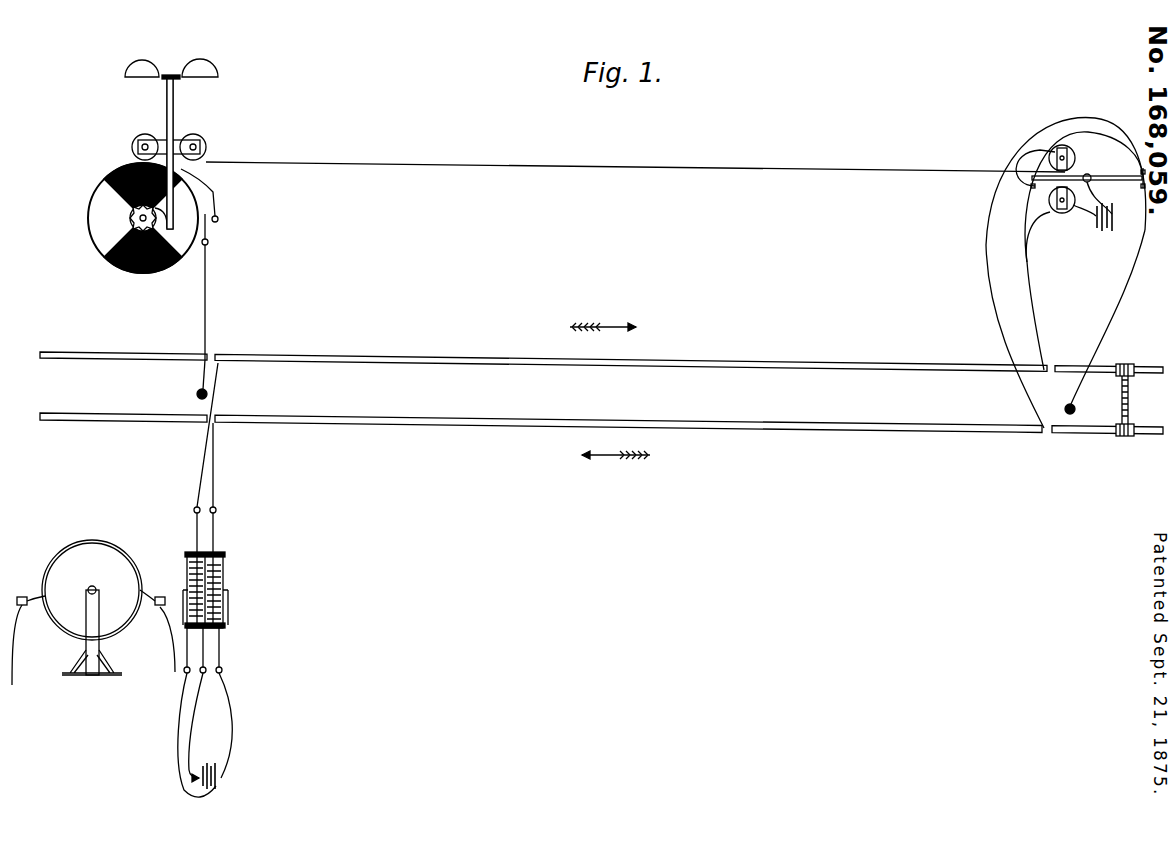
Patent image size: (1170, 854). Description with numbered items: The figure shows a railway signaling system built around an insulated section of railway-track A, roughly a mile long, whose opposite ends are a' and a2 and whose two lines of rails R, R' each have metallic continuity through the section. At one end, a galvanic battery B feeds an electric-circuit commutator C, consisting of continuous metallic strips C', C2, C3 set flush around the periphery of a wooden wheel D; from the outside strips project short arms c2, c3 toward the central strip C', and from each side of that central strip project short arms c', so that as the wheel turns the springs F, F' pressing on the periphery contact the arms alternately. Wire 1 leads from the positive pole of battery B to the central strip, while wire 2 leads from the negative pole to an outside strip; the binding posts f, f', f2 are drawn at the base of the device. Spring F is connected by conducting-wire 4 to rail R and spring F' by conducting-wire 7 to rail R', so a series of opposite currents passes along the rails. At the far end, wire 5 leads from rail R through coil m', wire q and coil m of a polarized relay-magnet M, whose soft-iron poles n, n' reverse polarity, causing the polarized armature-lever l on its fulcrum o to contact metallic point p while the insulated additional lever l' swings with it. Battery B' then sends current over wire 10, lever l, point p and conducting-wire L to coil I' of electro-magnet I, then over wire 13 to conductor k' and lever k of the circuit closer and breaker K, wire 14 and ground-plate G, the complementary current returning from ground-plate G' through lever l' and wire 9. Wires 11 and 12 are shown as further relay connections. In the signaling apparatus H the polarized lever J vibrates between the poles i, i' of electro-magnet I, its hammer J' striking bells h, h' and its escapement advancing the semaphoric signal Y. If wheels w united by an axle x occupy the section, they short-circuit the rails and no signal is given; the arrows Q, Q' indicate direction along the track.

The bell h is at (142, 69).
The bell h' is at (200, 68).
The hammer J' is at (171, 68).
The polarized lever J is at (173, 154).
The electro-magnet I is at (157, 137).
The coil of electro-magnet I' is at (214, 150).
The signaling apparatus H is at (98, 125).
The pole of electro-magnet i is at (153, 148).
The pole of electro-magnet i' is at (185, 148).
The semaphoric signal Y is at (126, 176).
The circuit closer and breaker K is at (230, 218).
The metallic lever k is at (208, 230).
The metallic conductor k' is at (218, 208).
The wire 13 is at (198, 192).
The wire 14 is at (211, 317).
The conducting-wire L is at (635, 157).
The line of rails R is at (601, 359).
The line of rails R' is at (601, 432).
The insulated section of railway-track A is at (692, 391).
The direction arrow Q is at (603, 319).
The direction arrow Q' is at (616, 463).
The ground-plate G is at (195, 394).
The end of section a' is at (215, 435).
The conducting-wire 4 is at (199, 445).
The conducting-wire 7 is at (218, 465).
The metallic spring F is at (189, 527).
The metallic spring F' is at (220, 528).
The electric-circuit commutator C is at (197, 588).
The continuous metallic strip C' is at (205, 540).
The continuous metallic strip C2 is at (190, 552).
The continuous metallic strip C3 is at (222, 552).
The short strip or arm c' is at (236, 571).
The short strip or arm c2 is at (186, 590).
The short strip or arm c3 is at (223, 560).
The binding post f is at (204, 650).
The binding post f' is at (189, 650).
The binding post f2 is at (222, 650).
The wire 1 is at (195, 727).
The wire 2 is at (193, 735).
The galvanic battery B is at (213, 768).
The polarized relay-magnet M is at (1068, 179).
The coil m is at (1060, 148).
The coil m' is at (1061, 210).
The soft-iron pole n is at (1061, 164).
The soft-iron pole n' is at (1062, 193).
The wire 9 is at (1076, 169).
The wire 10 is at (1084, 211).
The wire 11 is at (1083, 196).
The wire 12 is at (1066, 175).
The polarized armature-lever l is at (1080, 169).
The additional lever l' is at (1116, 170).
The fulcrum o is at (1087, 173).
The metallic point p is at (1148, 186).
The wire q is at (1099, 198).
The galvanic battery B' is at (1104, 223).
The wire 5 is at (1038, 291).
The ground-plate G' is at (1077, 407).
The end of section a2 is at (1046, 406).
The axle x is at (1131, 399).
The wheel w is at (1125, 400).